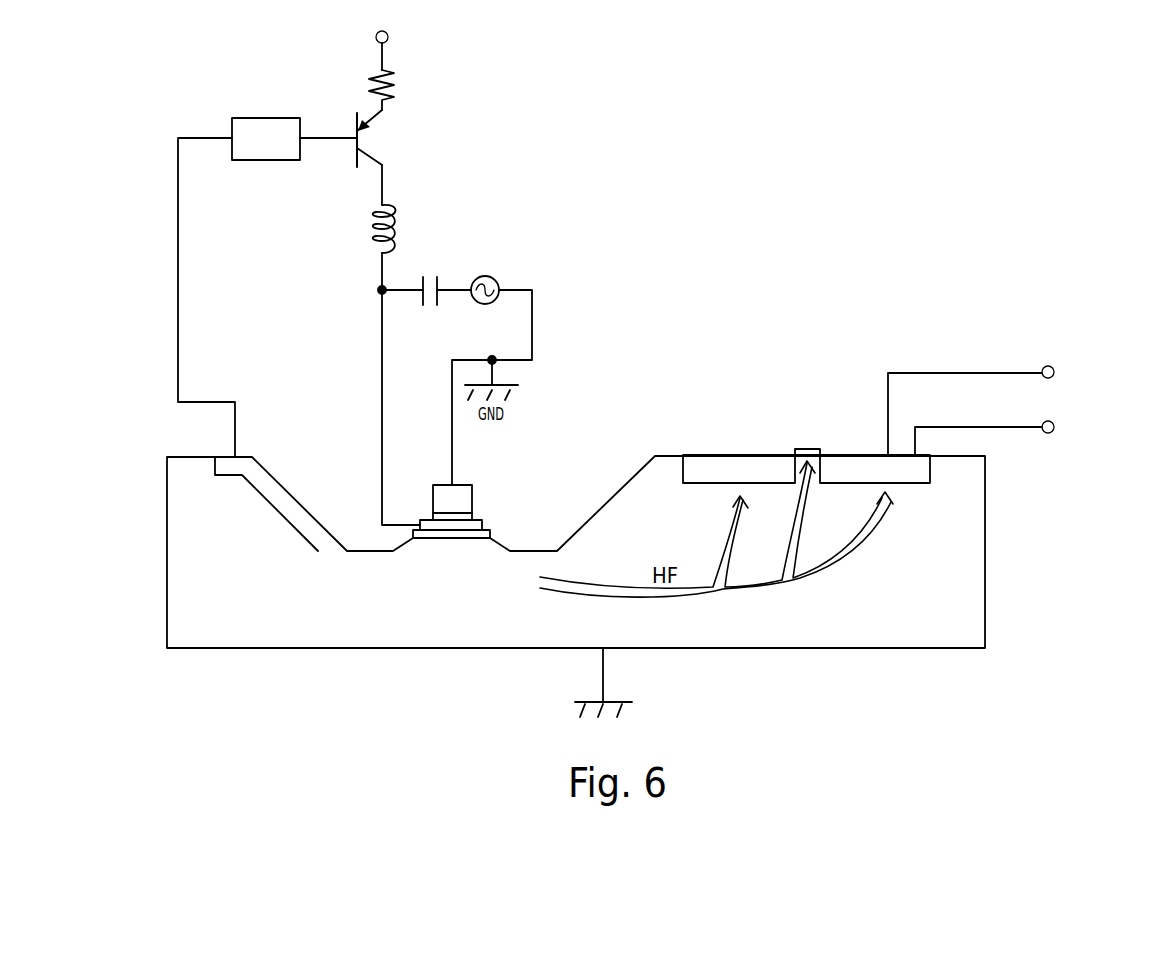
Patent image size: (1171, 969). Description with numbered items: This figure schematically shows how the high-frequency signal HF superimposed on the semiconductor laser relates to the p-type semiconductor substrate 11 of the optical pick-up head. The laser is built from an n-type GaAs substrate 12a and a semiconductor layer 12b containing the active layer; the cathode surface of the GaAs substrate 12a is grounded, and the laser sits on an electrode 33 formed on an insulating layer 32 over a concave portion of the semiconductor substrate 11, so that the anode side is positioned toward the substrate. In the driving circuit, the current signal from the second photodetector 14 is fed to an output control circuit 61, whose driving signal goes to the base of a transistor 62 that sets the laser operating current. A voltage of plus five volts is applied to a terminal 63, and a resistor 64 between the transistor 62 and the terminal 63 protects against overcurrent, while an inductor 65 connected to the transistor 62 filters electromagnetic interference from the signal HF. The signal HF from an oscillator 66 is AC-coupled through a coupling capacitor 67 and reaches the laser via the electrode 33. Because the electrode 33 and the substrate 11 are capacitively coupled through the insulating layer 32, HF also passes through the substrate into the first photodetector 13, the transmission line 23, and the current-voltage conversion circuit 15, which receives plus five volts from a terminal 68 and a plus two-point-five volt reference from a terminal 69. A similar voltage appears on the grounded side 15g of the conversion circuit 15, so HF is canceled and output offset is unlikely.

The semiconductor substrate 11 is at (985, 590).
The GaAs substrate 12a is at (473, 487).
The semiconductor layer 12b is at (477, 513).
The first photodetector 13 is at (705, 463).
The second photodetector 14 is at (310, 518).
The current-voltage conversion circuit 15 is at (848, 463).
The side of the current-voltage conversion circuit 15g is at (903, 483).
The transmission line 23 is at (808, 448).
The insulating layer 32 is at (427, 538).
The electrode 33 is at (465, 530).
The output control circuit 61 is at (268, 118).
The transistor 62 is at (373, 139).
The terminal 63 is at (389, 35).
The resistor 64 is at (395, 88).
The inductor 65 is at (367, 230).
The oscillator 66 is at (488, 276).
The coupling capacitor 67 is at (437, 273).
The terminal 68 is at (1055, 427).
The terminal 69 is at (1055, 372).